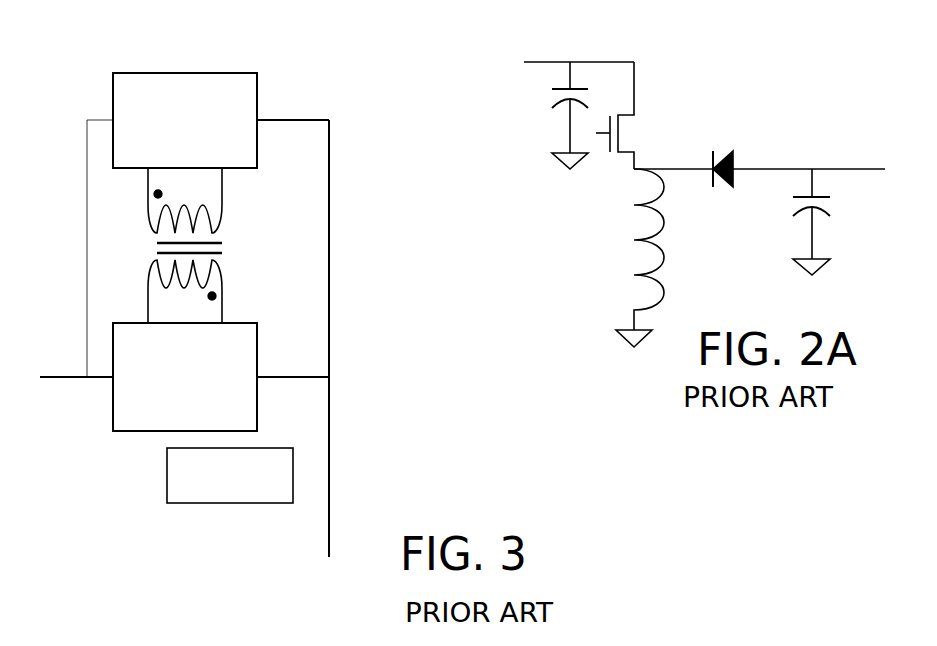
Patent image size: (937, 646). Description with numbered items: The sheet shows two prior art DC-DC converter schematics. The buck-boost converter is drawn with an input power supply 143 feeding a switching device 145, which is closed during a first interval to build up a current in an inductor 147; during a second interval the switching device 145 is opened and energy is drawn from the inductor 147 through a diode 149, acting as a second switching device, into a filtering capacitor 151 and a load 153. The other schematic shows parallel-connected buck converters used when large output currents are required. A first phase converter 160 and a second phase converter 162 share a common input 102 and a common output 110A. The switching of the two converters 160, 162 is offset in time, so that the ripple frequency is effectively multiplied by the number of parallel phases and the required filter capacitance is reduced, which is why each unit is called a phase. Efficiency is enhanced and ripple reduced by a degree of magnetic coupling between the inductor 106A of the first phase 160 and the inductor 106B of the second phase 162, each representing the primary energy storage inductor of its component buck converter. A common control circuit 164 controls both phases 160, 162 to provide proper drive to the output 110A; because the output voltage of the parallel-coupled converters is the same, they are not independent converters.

In FIG. 3, the common input 102 is at (72, 249).
In FIG. 3, the output 110A is at (298, 352).
In FIG. 3, the first phase converter 160 is at (238, 118).
In FIG. 3, the second phase converter 162 is at (238, 357).
In FIG. 3, the inductor 106A is at (220, 213).
In FIG. 3, the inductor 106B is at (219, 272).
In FIG. 3, the common control circuit 164 is at (176, 493).
In FIG. 2A, the input power supply 143 is at (579, 101).
In FIG. 2A, the switching device 145 is at (625, 130).
In FIG. 2A, the inductor 147 is at (640, 275).
In FIG. 2A, the diode 149 is at (732, 155).
In FIG. 2A, the filtering capacitor 151 is at (793, 224).
In FIG. 2A, the load 153 is at (759, 158).